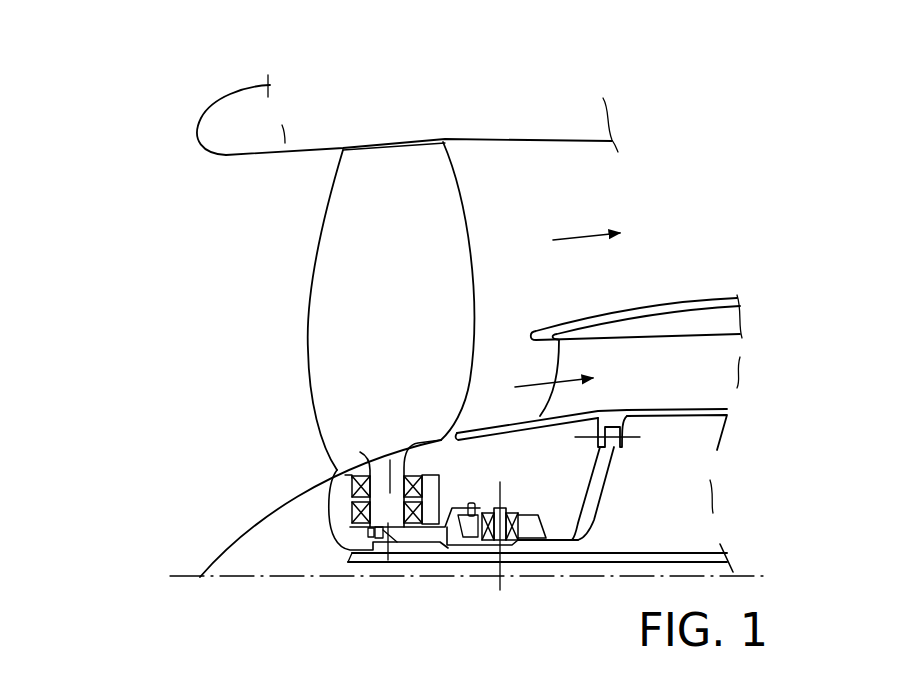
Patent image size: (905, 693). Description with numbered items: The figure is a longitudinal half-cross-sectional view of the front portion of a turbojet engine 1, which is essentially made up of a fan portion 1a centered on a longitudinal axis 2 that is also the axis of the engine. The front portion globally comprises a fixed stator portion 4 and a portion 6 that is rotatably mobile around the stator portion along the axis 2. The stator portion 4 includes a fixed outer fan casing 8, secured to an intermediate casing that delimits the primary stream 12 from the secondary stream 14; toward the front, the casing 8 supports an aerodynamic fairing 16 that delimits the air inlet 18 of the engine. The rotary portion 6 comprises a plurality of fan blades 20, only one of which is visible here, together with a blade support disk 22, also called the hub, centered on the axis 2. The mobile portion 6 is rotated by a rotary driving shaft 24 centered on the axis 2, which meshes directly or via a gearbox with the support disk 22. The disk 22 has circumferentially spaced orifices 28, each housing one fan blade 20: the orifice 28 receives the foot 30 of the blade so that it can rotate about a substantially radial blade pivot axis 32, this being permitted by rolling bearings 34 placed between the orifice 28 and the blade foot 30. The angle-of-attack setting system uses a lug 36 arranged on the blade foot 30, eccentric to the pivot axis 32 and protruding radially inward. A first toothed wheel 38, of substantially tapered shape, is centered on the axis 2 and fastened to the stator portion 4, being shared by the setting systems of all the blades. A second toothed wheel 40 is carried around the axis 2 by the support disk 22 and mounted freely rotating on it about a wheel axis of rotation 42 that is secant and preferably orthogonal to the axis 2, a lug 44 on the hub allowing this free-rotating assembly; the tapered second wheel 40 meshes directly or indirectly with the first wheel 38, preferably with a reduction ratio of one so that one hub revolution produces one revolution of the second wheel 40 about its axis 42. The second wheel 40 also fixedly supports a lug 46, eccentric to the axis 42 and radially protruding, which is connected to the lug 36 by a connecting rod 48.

The turbojet engine 1 is at (122, 158).
The fan portion 1a is at (386, 121).
The longitudinal axis 2 is at (177, 575).
The stator portion 4 is at (739, 380).
The rotatably mobile portion 6 is at (469, 232).
The fixed outer fan casing 8 is at (293, 153).
The primary stream 12 is at (535, 381).
The secondary stream 14 is at (553, 239).
The aerodynamic fairing 16 is at (221, 109).
The air inlet 18 is at (222, 249).
The fan blade 20 is at (332, 222).
The blade support disk 22 is at (332, 530).
The rotary driving shaft 24 is at (552, 563).
The orifice 28 is at (398, 487).
The blade foot 30 is at (381, 490).
The blade pivot axis 32 is at (388, 424).
The rolling bearings 34 is at (342, 490).
The lug 36 is at (377, 543).
The first toothed wheel 38 is at (577, 537).
The second toothed wheel 40 is at (490, 513).
The wheel axis of rotation 42 is at (512, 515).
The lug 44 is at (495, 552).
The lug 46 is at (473, 503).
The connecting rod 48 is at (423, 556).